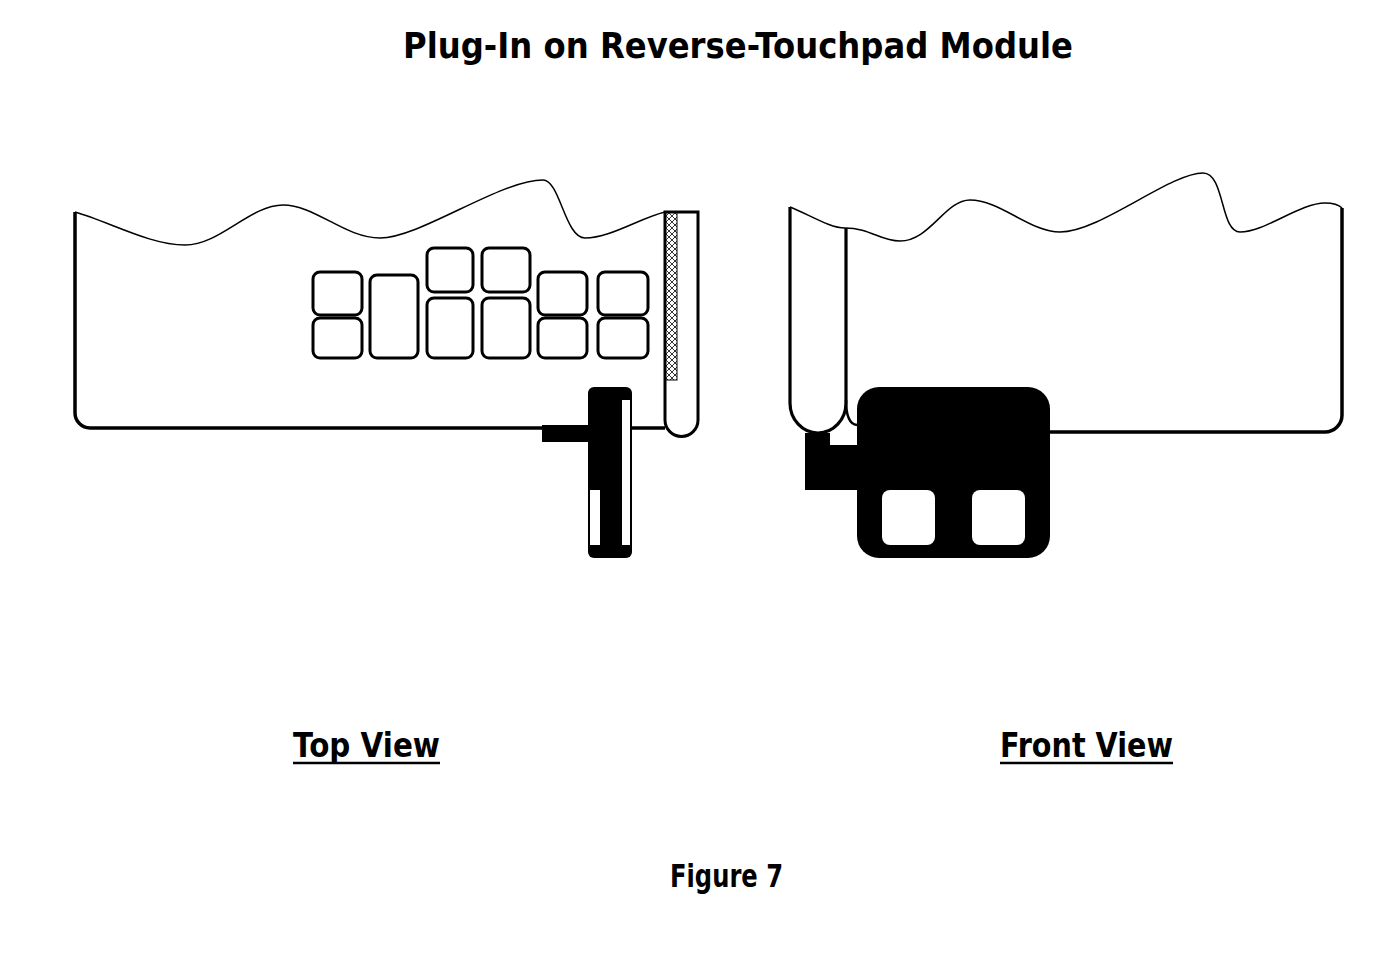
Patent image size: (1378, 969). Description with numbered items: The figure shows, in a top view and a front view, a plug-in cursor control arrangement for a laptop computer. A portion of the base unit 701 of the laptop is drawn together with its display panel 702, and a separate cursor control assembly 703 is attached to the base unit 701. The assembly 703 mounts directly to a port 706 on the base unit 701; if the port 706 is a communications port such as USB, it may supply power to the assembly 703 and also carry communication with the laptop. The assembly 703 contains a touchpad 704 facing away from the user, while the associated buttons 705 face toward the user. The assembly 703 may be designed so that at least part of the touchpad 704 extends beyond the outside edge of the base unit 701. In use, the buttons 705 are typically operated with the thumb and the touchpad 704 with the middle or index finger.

The base unit 701 is at (237, 223).
The display panel 702 is at (688, 197).
The cursor control assembly 703 is at (612, 568).
The touchpad 704 is at (637, 520).
The buttons 705 is at (585, 520).
The port 706 is at (547, 450).